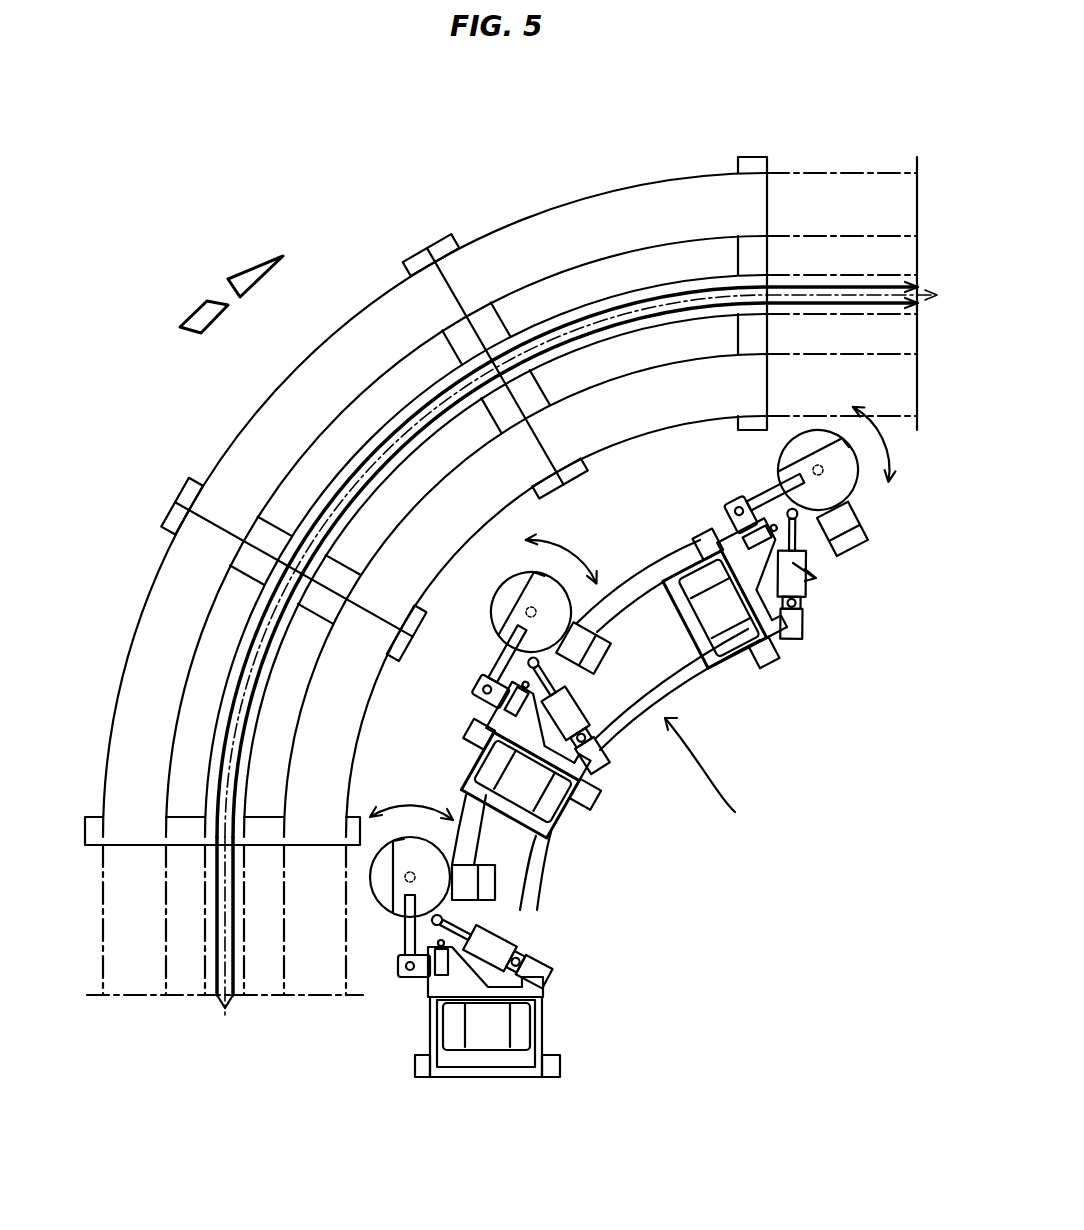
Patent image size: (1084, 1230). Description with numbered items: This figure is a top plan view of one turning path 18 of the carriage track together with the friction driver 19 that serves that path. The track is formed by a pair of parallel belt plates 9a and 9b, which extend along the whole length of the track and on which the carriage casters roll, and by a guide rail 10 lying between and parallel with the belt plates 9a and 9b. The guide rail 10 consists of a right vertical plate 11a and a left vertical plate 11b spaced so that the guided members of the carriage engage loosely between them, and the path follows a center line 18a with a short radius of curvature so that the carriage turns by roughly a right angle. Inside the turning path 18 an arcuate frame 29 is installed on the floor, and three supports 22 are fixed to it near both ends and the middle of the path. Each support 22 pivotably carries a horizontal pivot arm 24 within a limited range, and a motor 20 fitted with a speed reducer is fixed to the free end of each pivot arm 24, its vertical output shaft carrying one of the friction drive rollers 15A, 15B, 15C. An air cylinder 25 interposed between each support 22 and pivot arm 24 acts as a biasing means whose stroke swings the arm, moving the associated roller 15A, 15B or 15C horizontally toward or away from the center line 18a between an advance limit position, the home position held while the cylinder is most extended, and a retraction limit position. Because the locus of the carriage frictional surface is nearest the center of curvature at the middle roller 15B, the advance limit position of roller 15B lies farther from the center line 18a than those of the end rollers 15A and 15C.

The belt plate 9a is at (332, 692).
The belt plate 9b is at (650, 206).
The guide rail 10 is at (566, 326).
The right vertical plate 11a is at (398, 393).
The left vertical plate 11b is at (376, 452).
The friction drive roller 15A is at (388, 881).
The middle friction drive roller 15B is at (518, 590).
The friction drive roller 15C is at (792, 452).
The turning path 18 is at (356, 312).
The center line 18a is at (346, 502).
The friction driver 19 is at (715, 772).
The motor 20 is at (470, 879).
The support 22 is at (500, 1028).
The pivot arm 24 is at (408, 935).
The air cylinder 25 is at (543, 962).
The arcuate frame 29 is at (663, 688).